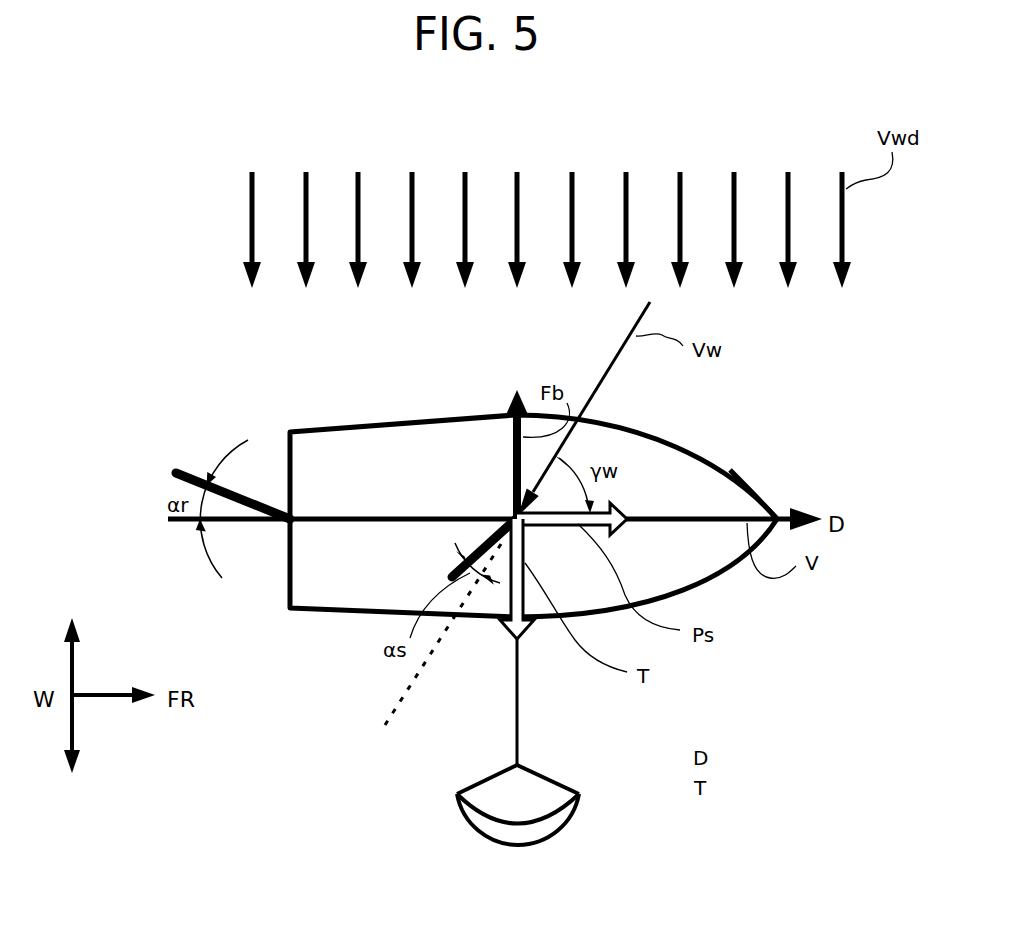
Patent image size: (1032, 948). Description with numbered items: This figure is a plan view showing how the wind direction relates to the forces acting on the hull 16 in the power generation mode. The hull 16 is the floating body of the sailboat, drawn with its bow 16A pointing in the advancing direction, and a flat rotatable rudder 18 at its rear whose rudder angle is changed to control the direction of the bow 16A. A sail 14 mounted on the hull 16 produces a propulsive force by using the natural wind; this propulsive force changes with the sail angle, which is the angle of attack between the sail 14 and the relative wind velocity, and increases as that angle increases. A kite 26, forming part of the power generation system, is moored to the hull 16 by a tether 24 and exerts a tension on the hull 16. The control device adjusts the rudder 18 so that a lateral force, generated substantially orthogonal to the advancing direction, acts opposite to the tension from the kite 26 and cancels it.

The sail 14 is at (458, 570).
The hull 16 is at (383, 420).
The bow 16A is at (777, 503).
The rudder 18 is at (172, 471).
The tether 24 is at (516, 710).
The kite 26 is at (557, 835).